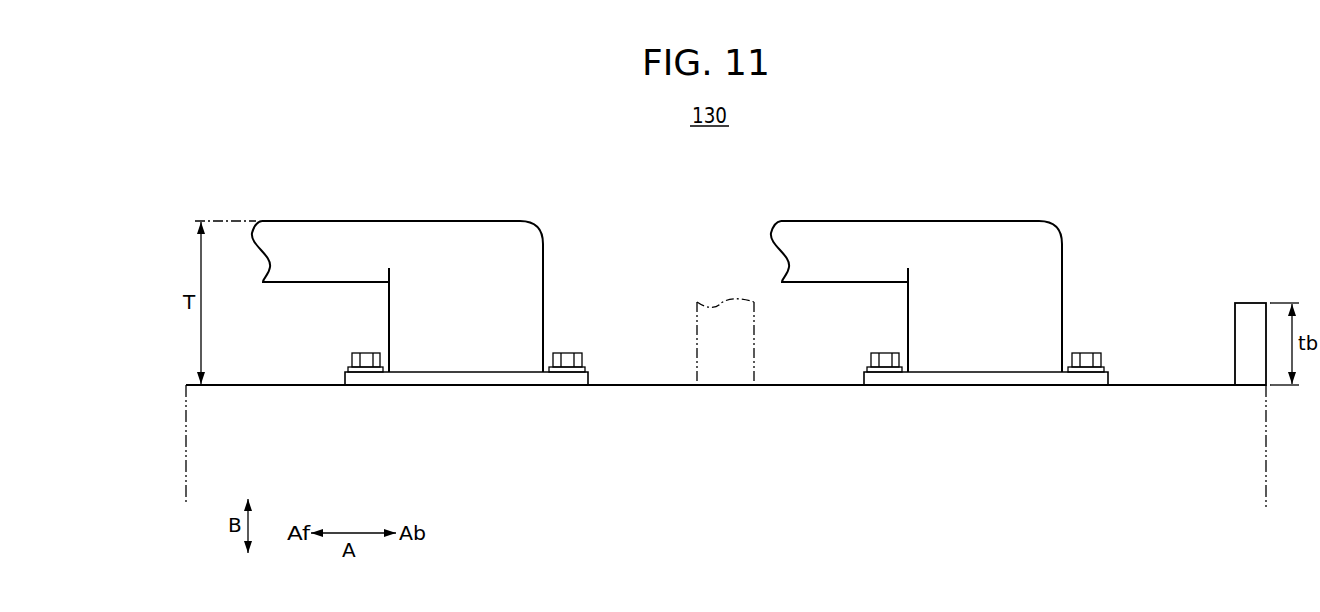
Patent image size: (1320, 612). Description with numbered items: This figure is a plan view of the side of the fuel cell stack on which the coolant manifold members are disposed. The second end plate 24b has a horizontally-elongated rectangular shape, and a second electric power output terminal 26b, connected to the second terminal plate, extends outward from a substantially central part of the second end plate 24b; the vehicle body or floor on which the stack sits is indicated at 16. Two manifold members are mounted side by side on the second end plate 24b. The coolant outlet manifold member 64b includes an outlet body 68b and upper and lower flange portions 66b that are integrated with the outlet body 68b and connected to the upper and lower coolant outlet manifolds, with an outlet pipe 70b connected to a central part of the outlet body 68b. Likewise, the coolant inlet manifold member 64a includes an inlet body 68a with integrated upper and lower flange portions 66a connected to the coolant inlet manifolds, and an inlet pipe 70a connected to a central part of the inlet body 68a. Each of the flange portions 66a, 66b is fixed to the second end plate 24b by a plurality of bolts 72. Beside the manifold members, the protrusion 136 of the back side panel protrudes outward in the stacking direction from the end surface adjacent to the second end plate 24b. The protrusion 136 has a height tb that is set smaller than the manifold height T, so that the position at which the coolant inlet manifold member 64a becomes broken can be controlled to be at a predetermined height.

The vehicle body / floor panel 16 is at (178, 444).
The second end plate 24b is at (1175, 382).
The second electric power output terminal 26b is at (718, 315).
The coolant inlet manifold member 64a is at (948, 251).
The coolant outlet manifold member 64b is at (428, 251).
The flange portions 66a is at (977, 380).
The flange portions 66b is at (452, 380).
The inlet body 68a is at (1031, 258).
The outlet body 68b is at (510, 260).
The inlet pipe 70a is at (838, 233).
The outlet pipe 70b is at (320, 233).
The bolts 72 is at (364, 360).
The protrusion 136 is at (1250, 313).